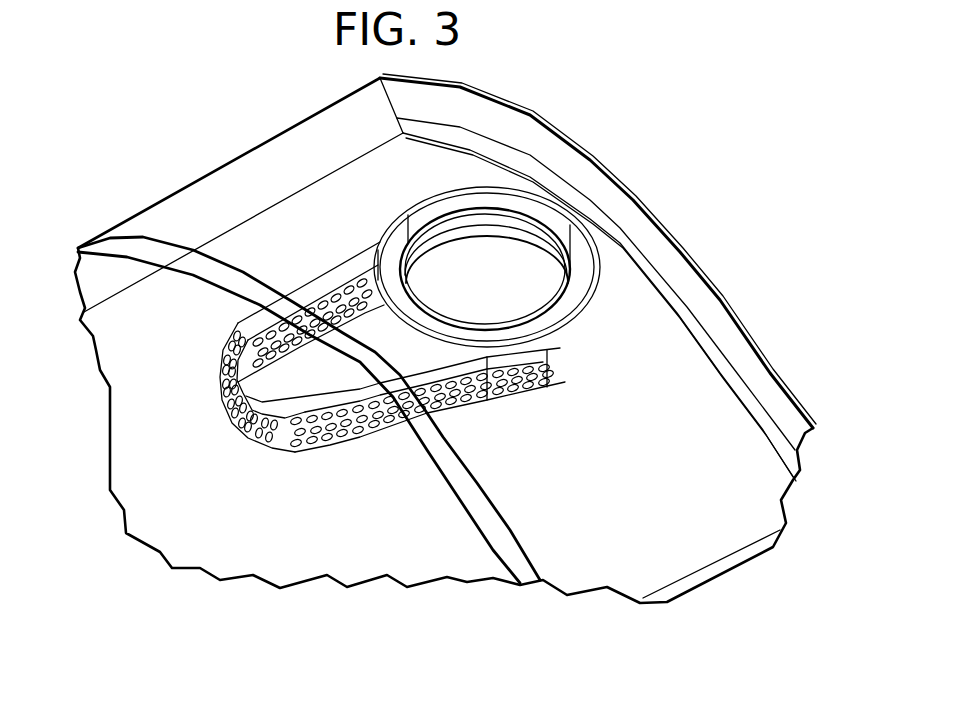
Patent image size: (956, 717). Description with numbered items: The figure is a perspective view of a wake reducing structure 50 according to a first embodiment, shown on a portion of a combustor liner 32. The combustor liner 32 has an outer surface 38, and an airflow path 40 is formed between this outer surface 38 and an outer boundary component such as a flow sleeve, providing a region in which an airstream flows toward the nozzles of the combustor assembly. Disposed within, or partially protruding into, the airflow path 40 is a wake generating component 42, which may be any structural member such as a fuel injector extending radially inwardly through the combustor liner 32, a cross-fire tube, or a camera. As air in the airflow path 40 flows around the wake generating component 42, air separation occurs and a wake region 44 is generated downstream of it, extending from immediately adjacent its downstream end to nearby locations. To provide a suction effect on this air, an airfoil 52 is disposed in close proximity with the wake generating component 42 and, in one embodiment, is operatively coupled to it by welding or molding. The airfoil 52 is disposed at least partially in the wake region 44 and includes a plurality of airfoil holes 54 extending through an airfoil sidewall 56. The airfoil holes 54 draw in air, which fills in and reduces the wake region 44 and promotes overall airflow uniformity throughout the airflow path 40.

The combustor liner 32 is at (717, 405).
The outer surface 38 is at (293, 255).
The airflow path 40 is at (590, 197).
The wake generating component 42 is at (570, 308).
The wake region 44 is at (344, 372).
The wake reducing structure 50 is at (491, 401).
The airfoil 52 is at (356, 236).
The airfoil holes 54 is at (241, 337).
The airfoil sidewall 56 is at (245, 427).